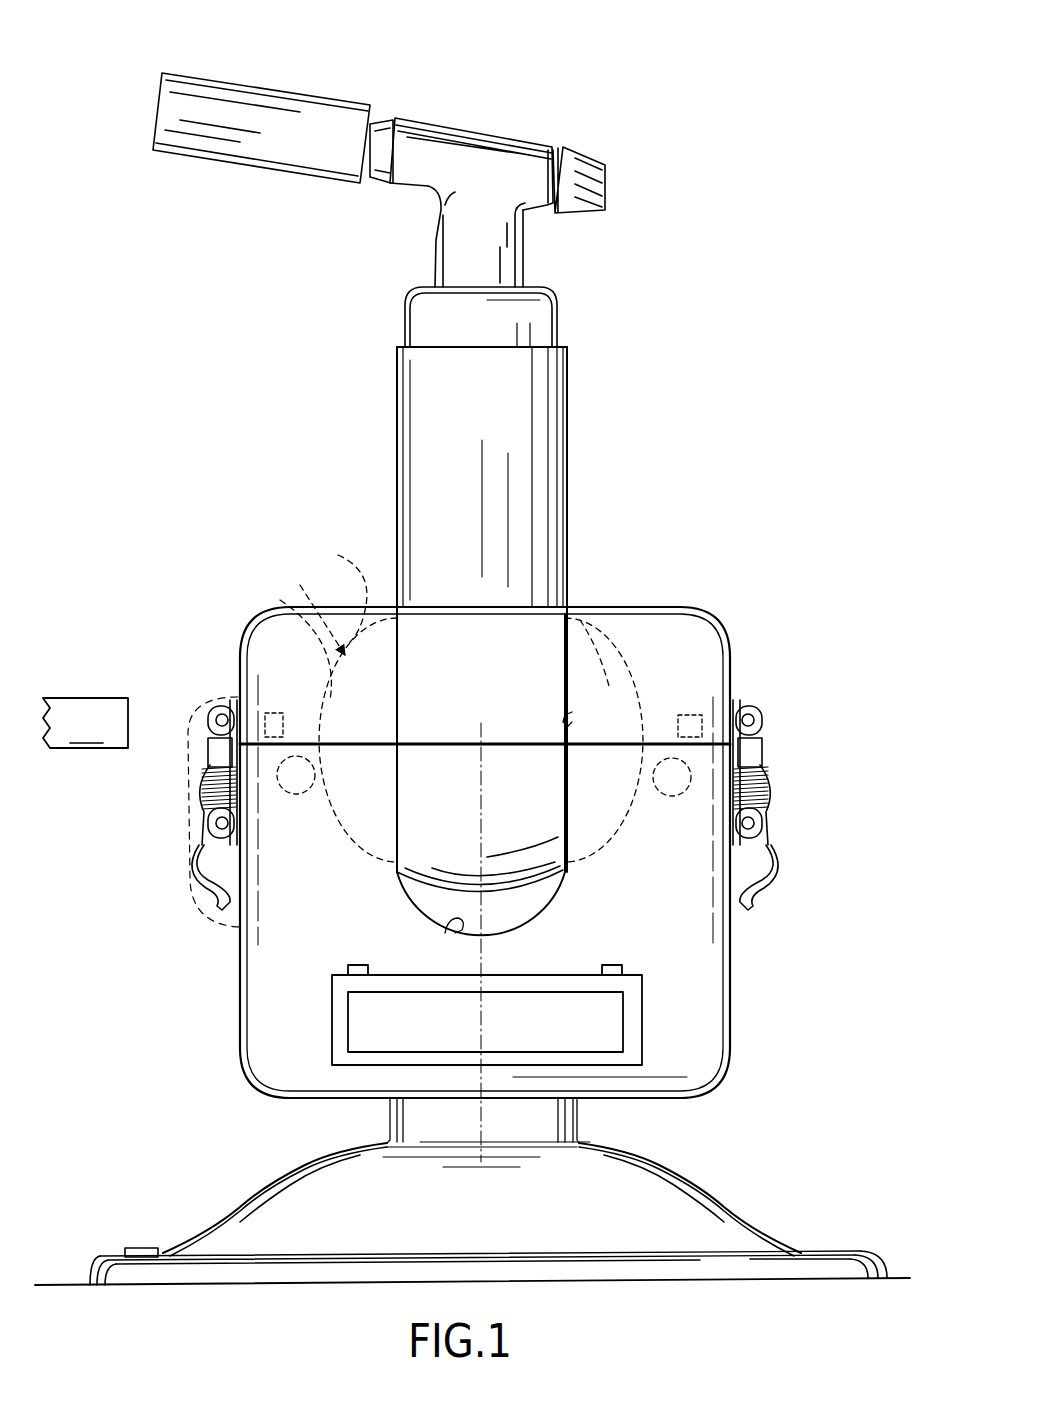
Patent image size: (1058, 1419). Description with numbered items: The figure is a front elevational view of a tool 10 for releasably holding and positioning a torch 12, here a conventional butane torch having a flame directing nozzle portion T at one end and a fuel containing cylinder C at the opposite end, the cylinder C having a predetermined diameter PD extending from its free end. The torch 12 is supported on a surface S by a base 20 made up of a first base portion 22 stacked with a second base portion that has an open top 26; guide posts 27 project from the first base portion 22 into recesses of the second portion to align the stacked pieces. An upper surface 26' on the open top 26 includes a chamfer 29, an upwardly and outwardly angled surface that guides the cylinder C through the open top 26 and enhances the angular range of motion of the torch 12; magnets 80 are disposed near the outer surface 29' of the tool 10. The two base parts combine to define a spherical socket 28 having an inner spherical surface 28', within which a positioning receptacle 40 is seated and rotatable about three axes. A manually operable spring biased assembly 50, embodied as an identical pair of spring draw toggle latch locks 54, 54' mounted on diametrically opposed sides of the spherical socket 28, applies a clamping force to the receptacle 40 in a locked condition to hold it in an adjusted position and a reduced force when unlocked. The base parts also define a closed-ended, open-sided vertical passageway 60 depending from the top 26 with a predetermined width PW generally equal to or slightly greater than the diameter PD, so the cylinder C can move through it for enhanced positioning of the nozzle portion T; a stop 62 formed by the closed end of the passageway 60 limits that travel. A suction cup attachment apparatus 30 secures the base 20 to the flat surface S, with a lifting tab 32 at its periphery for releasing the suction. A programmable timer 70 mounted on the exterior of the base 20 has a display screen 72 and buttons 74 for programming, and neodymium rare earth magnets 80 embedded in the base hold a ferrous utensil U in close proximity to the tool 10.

The tool 10 is at (162, 1043).
The flame directing nozzle portion T is at (210, 93).
The torch 12 is at (495, 589).
The fuel containing cylinder C is at (420, 357).
The predetermined diameter PD is at (350, 447).
The predetermined width PW is at (568, 805).
The base 20 is at (534, 845).
The first base portion 22 is at (684, 1080).
The open top 26 is at (485, 658).
The upper surface 26' is at (485, 649).
The guide posts 27 is at (270, 710).
The spherical socket 28 is at (476, 755).
The inner spherical surface 28' is at (307, 626).
The chamfer 29 is at (467, 613).
The housing side wall 29' is at (239, 992).
The suction cup attachment apparatus 30 is at (488, 1191).
The lifting tab 32 is at (135, 1248).
The positioning receptacle 40 is at (538, 887).
The manually operable spring biased assembly 50 is at (778, 710).
The spring draw toggle latch lock 54 is at (188, 812).
The spring draw toggle latch lock 54' is at (793, 877).
The passageway 60 is at (567, 716).
The stop 62 is at (460, 923).
The programmable timer 70 is at (557, 997).
The display screen 72 is at (555, 997).
The buttons 74 is at (358, 967).
The neodymium rare earth magnets 80 is at (313, 740).
The surface S is at (56, 1283).
The utensil U is at (85, 723).